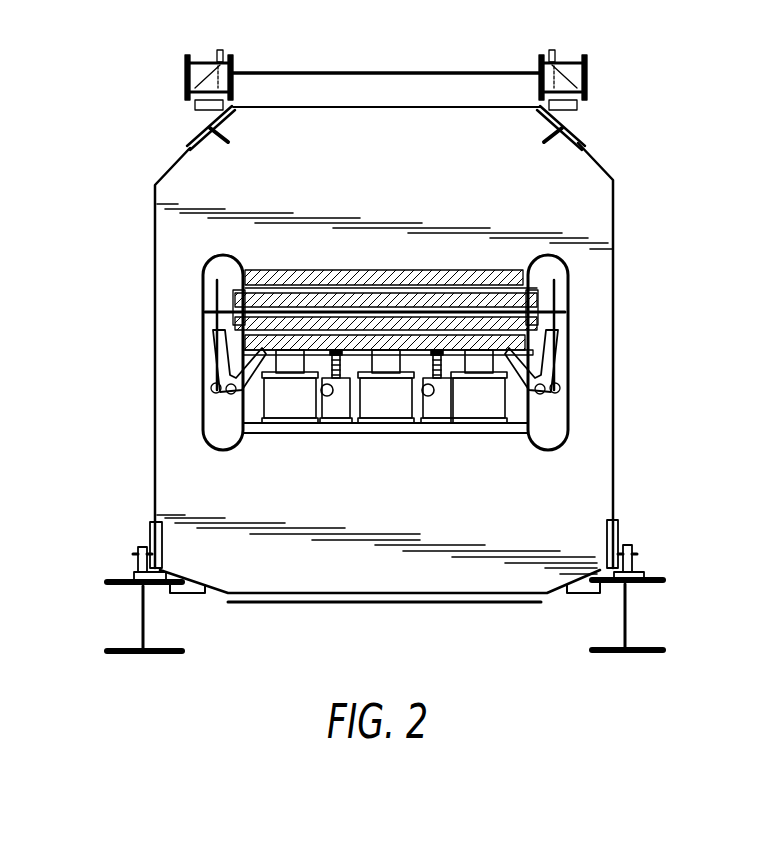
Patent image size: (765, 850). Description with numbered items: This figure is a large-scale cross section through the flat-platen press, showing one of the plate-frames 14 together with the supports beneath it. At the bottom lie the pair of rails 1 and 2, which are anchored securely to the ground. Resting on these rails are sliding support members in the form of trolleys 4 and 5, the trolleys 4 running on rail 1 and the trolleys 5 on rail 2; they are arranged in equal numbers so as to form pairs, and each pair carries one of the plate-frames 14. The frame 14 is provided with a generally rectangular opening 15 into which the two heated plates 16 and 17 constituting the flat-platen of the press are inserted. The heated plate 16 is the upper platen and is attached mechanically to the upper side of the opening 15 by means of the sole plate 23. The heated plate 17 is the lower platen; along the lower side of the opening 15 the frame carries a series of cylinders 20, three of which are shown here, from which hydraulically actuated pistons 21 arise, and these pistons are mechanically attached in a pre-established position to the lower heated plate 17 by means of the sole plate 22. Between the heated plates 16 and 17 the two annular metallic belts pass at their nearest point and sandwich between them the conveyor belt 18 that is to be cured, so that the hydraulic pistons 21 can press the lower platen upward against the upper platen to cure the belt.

The rail 1 is at (628, 632).
The rail 2 is at (143, 620).
The trolley 4 is at (612, 530).
The trolley 5 is at (152, 530).
The plate-frame 14 is at (173, 195).
The opening 15 is at (218, 272).
The heated plate 16 is at (292, 282).
The heated plate 17 is at (323, 323).
The conveyor belt 18 is at (414, 290).
The cylinder 20 is at (281, 407).
The piston 21 is at (289, 364).
The sole plate 22 is at (455, 345).
The sole plate 23 is at (378, 290).